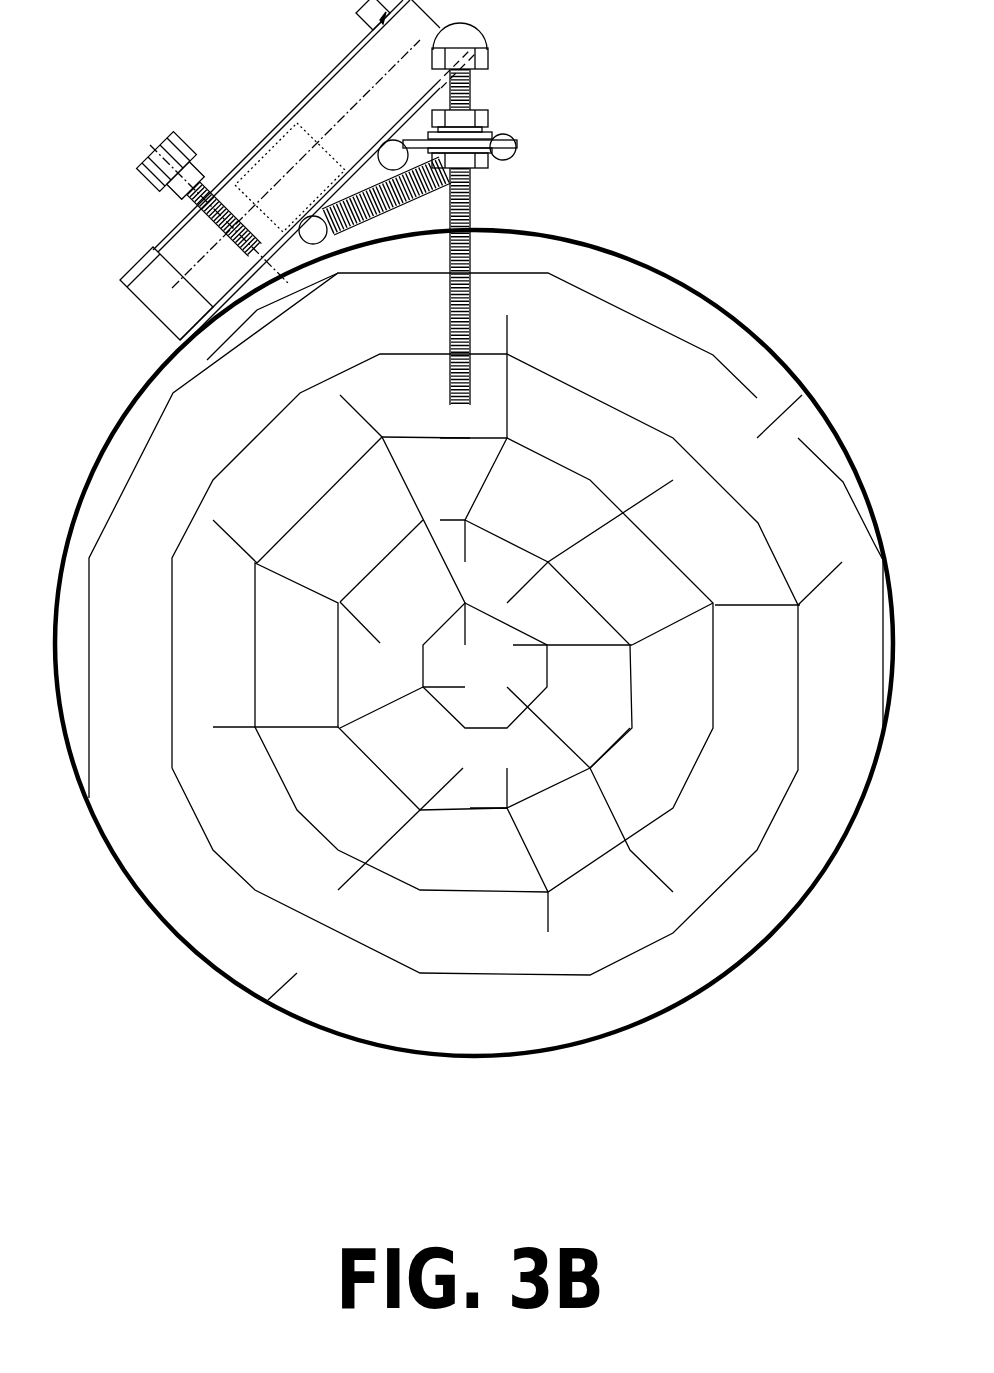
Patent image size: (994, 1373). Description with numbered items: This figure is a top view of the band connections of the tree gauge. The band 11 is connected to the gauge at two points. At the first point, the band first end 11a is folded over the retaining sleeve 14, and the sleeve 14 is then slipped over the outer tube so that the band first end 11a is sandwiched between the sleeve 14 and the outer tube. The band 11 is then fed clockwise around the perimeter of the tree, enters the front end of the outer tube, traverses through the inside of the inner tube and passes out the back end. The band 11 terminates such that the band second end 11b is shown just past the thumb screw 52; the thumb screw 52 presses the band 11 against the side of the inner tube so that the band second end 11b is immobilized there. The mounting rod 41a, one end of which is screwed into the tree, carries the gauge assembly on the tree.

The band 11 is at (178, 942).
The band first end 11a is at (212, 308).
The band second end 11b is at (274, 222).
The retaining sleeve 14 is at (140, 313).
The mounting rod 41a is at (483, 199).
The thumb screw 52 is at (186, 145).